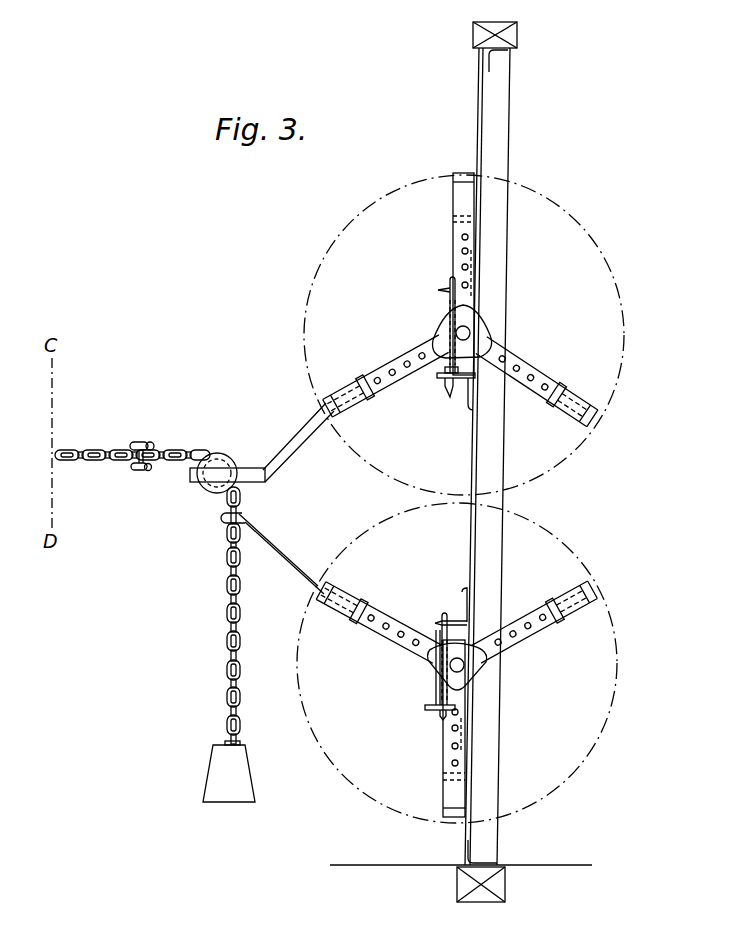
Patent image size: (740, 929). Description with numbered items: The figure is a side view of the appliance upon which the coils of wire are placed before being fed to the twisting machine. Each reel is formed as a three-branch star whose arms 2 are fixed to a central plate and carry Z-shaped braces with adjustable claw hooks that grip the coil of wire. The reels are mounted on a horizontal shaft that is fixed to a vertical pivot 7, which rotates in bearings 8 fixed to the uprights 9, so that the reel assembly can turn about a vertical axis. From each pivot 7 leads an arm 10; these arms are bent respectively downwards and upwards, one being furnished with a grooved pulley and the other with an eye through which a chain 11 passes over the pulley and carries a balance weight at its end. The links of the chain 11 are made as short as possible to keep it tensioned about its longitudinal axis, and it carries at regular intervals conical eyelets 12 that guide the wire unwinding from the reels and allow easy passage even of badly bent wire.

The arms 2 is at (566, 413).
The vertical pivot 7 is at (448, 400).
The bearings 8 is at (442, 292).
The uprights 9 is at (503, 128).
The arm 10 is at (283, 455).
The chain 11 is at (100, 461).
The conical eyelets 12 is at (141, 469).